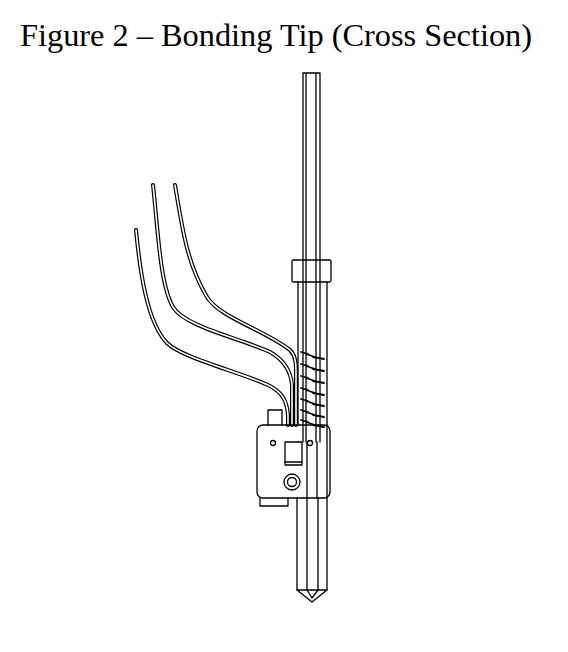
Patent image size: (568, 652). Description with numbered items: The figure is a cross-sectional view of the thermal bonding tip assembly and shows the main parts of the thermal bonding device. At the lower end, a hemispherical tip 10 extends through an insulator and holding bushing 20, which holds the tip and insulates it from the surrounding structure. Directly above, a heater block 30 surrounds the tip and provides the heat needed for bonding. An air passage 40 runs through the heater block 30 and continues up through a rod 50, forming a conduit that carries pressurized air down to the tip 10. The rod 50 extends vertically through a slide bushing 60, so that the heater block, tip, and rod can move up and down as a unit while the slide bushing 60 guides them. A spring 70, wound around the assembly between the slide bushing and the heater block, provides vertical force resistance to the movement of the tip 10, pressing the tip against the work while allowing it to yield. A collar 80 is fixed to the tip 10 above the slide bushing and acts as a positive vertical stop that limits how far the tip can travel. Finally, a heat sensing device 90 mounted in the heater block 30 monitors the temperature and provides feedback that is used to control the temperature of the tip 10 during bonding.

The hemispherical tip 10 is at (314, 604).
The insulator and holding bushing 20 is at (328, 548).
The heater block 30 is at (332, 470).
The air passage 40 is at (319, 171).
The rod 50 is at (321, 227).
The slide bushing 60 is at (328, 330).
The spring 70 is at (325, 394).
The collar 80 is at (333, 267).
The heat sensing device 90 is at (275, 505).